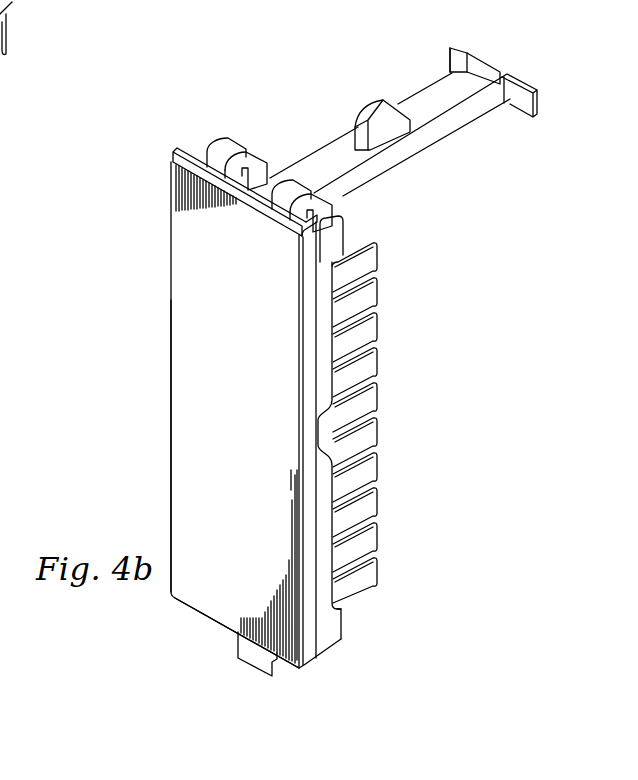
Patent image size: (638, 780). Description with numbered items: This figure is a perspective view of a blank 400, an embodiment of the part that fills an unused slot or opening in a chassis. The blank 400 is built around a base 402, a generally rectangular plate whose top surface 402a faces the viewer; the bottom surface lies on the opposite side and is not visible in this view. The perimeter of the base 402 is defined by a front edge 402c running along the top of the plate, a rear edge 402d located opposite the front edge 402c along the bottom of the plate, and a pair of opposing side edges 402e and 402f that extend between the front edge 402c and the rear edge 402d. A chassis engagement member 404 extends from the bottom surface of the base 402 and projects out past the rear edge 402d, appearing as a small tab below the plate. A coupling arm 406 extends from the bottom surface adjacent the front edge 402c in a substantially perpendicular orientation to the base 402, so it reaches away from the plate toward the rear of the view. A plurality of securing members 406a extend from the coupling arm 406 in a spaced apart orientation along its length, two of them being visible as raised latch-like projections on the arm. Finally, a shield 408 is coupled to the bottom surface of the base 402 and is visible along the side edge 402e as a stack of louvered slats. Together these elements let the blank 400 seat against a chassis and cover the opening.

The blank 400 is at (289, 89).
The base 402 is at (171, 401).
The top surface 402a is at (260, 426).
The front edge 402c is at (186, 153).
The rear edge 402d is at (193, 611).
The side edge 402e is at (343, 623).
The side edge 402f is at (169, 490).
The chassis engagement member 404 is at (253, 656).
The coupling arm 406 is at (412, 88).
The securing members 406a is at (376, 111).
The shield 408 is at (376, 436).